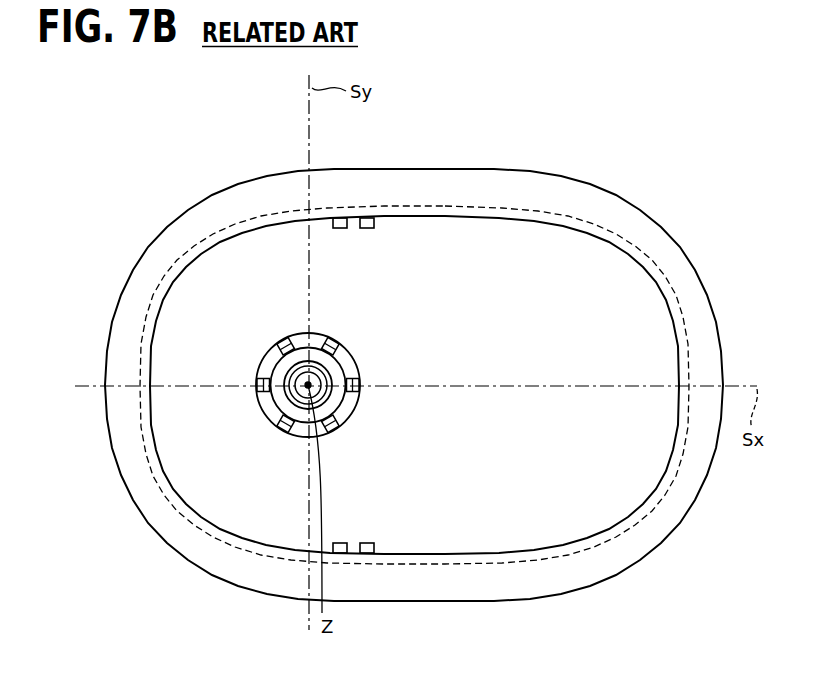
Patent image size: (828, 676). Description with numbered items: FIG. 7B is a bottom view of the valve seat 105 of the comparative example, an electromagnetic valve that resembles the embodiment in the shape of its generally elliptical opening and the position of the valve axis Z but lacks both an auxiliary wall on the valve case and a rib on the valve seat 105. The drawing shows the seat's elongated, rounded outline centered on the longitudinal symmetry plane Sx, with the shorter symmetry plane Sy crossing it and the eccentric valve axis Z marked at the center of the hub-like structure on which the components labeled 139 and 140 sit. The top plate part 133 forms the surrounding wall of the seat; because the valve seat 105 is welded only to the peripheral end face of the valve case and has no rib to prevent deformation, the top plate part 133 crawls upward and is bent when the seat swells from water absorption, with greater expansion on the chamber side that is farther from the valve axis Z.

The valve seat 105 is at (178, 136).
The top plate part 133 is at (575, 250).
The bearing holder 139 is at (347, 350).
The bearing 140 is at (316, 357).